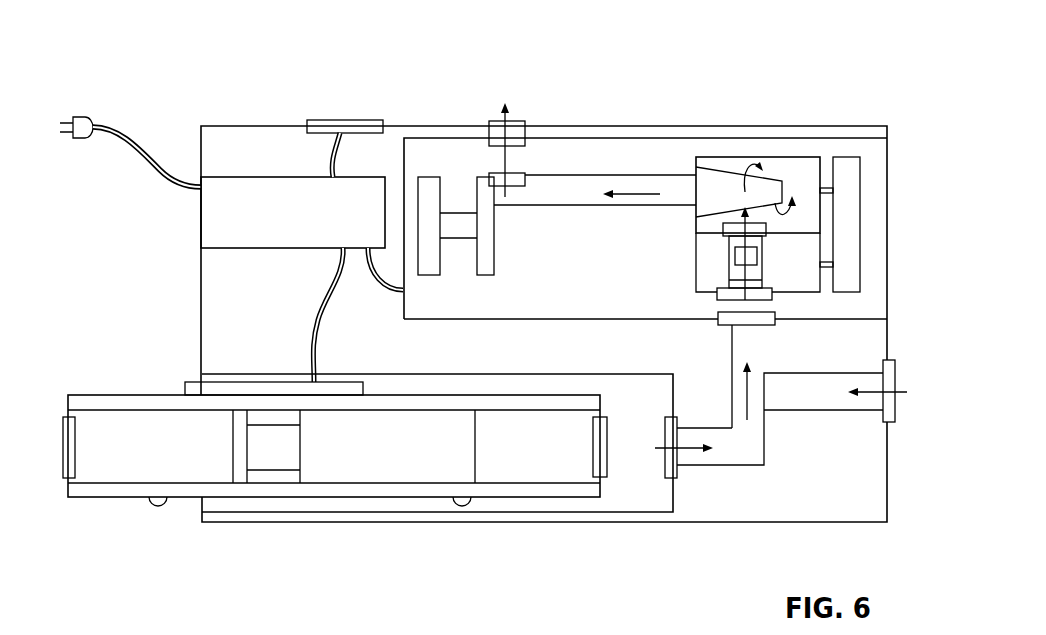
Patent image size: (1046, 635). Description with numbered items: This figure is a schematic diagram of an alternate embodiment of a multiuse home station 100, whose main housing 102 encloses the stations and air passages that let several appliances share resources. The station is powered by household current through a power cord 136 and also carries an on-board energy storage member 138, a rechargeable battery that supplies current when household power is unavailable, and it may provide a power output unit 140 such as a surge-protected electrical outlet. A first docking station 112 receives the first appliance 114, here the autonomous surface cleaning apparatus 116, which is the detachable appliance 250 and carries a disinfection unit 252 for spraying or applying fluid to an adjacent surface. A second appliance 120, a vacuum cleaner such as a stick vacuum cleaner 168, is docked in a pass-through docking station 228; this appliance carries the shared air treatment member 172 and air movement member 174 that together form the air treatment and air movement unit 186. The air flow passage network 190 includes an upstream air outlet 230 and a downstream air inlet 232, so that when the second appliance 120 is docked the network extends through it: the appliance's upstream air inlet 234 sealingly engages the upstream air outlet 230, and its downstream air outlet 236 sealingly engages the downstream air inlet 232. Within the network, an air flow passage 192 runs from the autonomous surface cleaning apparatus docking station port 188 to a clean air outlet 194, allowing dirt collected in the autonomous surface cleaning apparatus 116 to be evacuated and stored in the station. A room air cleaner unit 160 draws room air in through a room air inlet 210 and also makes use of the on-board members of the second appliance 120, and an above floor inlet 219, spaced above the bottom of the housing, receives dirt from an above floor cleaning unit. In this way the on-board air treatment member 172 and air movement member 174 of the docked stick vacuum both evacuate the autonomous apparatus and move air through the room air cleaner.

The multiuse home station 100 is at (170, 74).
The main housing 102 is at (201, 258).
The first docking station 112 is at (335, 479).
The first appliance 114 is at (350, 512).
The autonomous surface cleaning apparatus 116 is at (418, 497).
The second appliance 120 is at (818, 177).
The power cord 136 is at (142, 152).
The on-board energy storage member 138 is at (287, 177).
The power output unit 140 is at (312, 120).
The room air cleaner unit 160 is at (904, 353).
The stick vacuum cleaner 168 is at (875, 205).
The air treatment member 172 is at (790, 155).
The air movement member 174 is at (730, 276).
The air treatment and air movement unit 186 is at (704, 307).
The autonomous surface cleaning apparatus docking station port 188 is at (677, 480).
The air flow passage network 190 is at (775, 468).
The air flow passage 192 is at (715, 428).
The clean air outlet 194 is at (488, 112).
The room air inlet 210 is at (896, 420).
The above floor inlet 219 is at (752, 326).
The pass-through docking station 228 is at (700, 137).
The upstream air outlet 230 is at (762, 327).
The downstream air inlet 232 is at (495, 135).
The upstream air inlet 234 is at (773, 297).
The downstream air outlet 236 is at (524, 178).
The detachable appliance 250 is at (160, 540).
The disinfection unit 252 is at (235, 380).